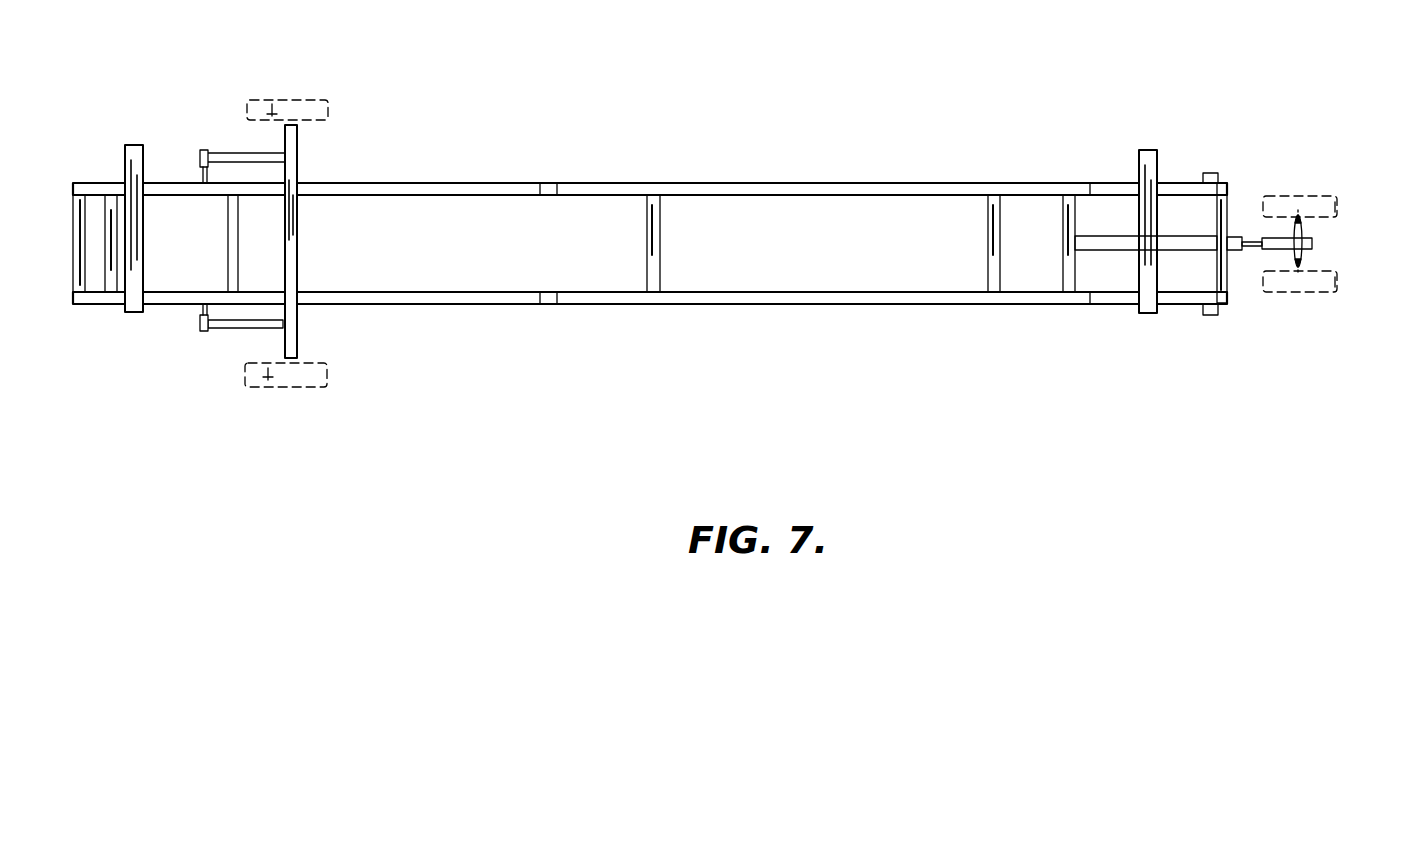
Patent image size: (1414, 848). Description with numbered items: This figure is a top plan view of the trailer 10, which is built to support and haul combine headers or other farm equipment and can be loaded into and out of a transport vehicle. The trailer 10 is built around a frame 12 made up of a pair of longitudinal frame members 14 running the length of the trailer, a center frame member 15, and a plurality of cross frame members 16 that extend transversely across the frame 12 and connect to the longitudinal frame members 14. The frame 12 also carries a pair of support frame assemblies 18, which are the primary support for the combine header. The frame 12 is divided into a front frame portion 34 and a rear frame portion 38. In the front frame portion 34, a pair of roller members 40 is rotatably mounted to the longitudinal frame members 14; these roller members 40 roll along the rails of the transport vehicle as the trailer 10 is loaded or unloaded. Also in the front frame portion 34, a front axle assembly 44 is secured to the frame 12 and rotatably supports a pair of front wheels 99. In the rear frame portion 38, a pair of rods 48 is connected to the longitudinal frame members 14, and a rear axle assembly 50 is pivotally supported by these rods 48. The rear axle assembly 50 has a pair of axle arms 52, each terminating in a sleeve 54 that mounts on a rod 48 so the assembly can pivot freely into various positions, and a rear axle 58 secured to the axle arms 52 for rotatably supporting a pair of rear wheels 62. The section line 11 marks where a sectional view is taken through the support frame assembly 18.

The trailer 10 is at (938, 76).
The section line 11 is at (1120, 162).
The frame 12 is at (627, 158).
The longitudinal frame members 14 is at (937, 184).
The center frame member 15 is at (1097, 250).
The cross frame members 16 is at (90, 196).
The support frame assemblies 18 is at (149, 150).
The front frame portion 34 is at (1190, 316).
The rear frame portion 38 is at (89, 322).
The roller members 40 is at (1205, 173).
The front axle assembly 44 is at (1244, 222).
The rods 48 is at (200, 175).
The rear axle assembly 50 is at (250, 336).
The axle arms 52 is at (226, 153).
The sleeve 54 is at (203, 150).
The rear axle 58 is at (297, 241).
The rear wheels 62 is at (277, 100).
The front wheels 99 is at (1337, 207).